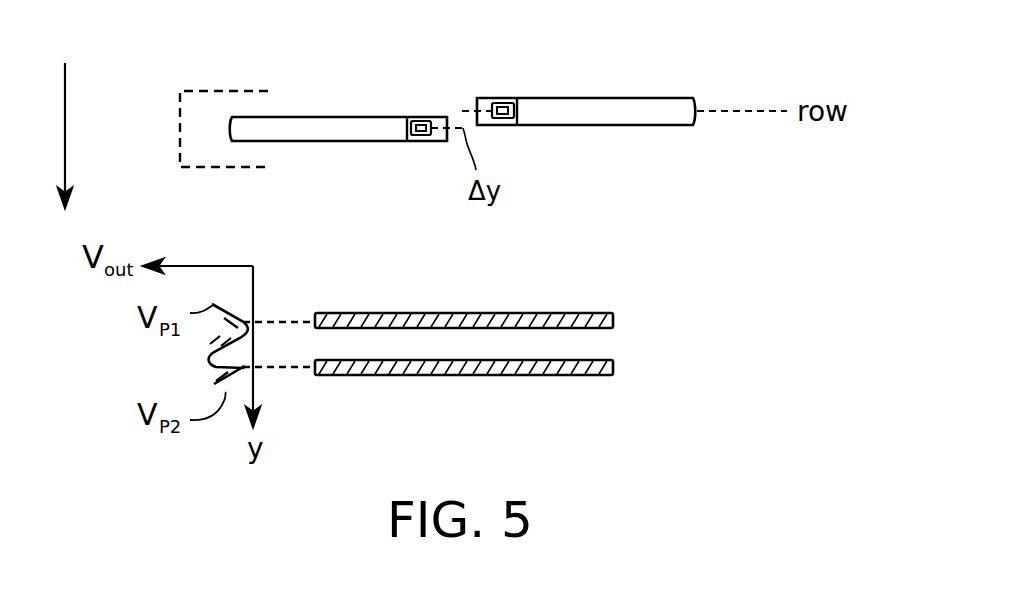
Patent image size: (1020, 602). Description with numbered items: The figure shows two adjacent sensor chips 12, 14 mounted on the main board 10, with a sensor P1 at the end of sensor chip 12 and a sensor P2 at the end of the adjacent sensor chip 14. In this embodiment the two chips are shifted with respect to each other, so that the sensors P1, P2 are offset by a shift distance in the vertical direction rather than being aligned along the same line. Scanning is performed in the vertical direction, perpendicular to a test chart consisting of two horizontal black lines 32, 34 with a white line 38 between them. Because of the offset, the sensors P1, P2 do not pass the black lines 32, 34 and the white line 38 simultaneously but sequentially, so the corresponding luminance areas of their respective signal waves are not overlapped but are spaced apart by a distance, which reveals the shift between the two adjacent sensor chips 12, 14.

The main board 10 is at (180, 125).
The sensor chip 12 is at (312, 115).
The sensor chip 14 is at (623, 97).
The sensor P1 is at (416, 120).
The sensor P2 is at (505, 104).
The black line 32 is at (615, 318).
The black line 34 is at (615, 365).
The white line 38 is at (604, 342).